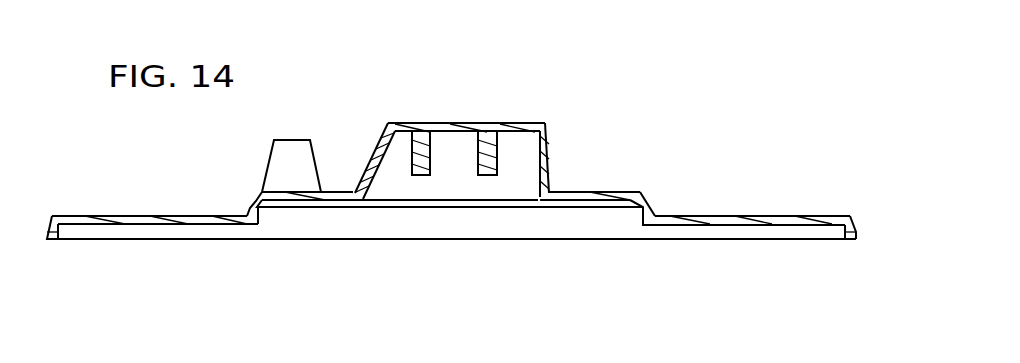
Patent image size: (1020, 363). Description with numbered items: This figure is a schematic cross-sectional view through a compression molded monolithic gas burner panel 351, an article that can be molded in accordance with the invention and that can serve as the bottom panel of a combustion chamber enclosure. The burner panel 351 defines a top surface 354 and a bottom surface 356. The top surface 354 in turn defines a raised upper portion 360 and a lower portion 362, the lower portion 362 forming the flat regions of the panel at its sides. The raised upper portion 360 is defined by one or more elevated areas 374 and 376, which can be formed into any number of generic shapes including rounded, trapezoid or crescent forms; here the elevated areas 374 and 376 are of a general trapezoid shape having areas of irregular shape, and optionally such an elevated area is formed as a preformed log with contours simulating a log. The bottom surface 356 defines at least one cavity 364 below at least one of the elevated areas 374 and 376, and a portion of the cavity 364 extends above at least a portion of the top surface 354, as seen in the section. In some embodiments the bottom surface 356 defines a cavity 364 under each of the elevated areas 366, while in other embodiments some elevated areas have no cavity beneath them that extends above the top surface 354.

The monolithic gas burner panel 351 is at (768, 165).
The top surface 354 is at (122, 215).
The bottom surface 356 is at (105, 242).
The raised upper portion 360 is at (297, 138).
The lower portion 362 is at (717, 215).
The cavity 364 is at (507, 187).
The elevated areas 366 is at (380, 137).
The elevated area 374 is at (523, 123).
The elevated area 376 is at (279, 163).